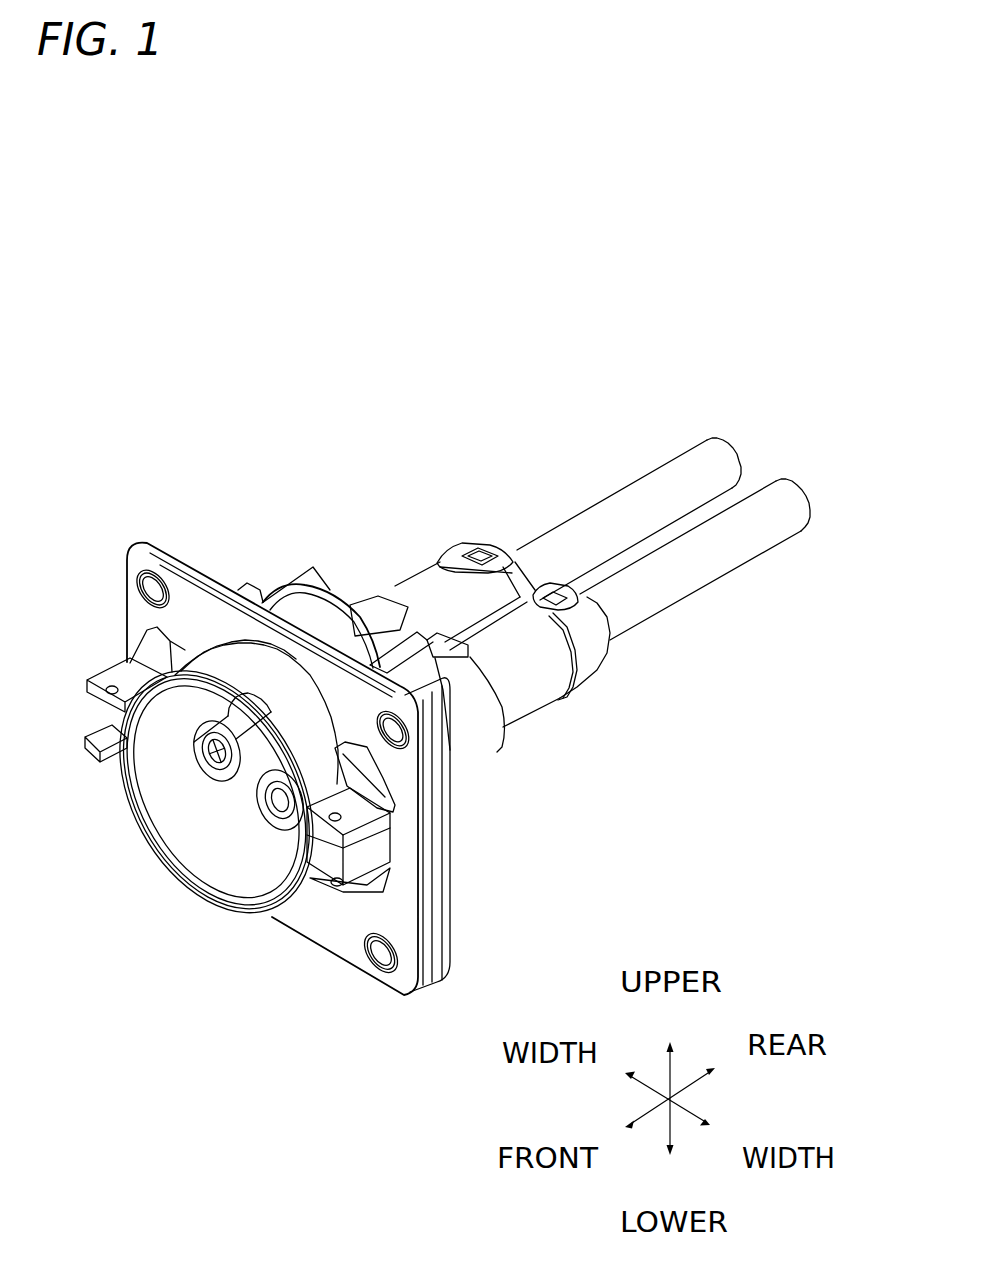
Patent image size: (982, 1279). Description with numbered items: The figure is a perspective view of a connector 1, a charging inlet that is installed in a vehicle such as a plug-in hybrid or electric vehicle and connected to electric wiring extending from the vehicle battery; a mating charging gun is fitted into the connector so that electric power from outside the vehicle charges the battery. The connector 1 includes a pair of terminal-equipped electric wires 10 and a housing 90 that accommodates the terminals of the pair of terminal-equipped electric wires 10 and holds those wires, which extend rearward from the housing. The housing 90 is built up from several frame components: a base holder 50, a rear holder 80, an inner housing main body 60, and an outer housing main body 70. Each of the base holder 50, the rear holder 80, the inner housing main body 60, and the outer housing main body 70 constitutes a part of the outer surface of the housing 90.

The connector 1 is at (645, 292).
The housing 90 is at (566, 326).
The outer housing main body 70 is at (146, 528).
The inner housing main body 60 is at (316, 596).
The base holder 50 is at (404, 566).
The rear holder 80 is at (482, 524).
The terminal-equipped electric wires 10 is at (653, 452).